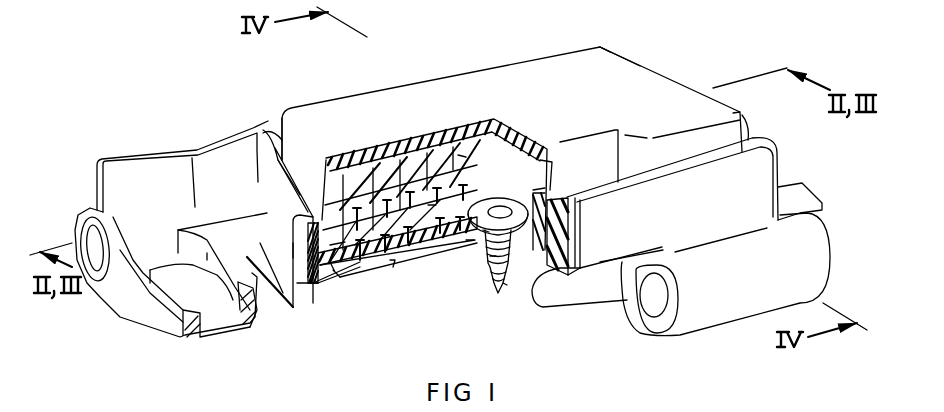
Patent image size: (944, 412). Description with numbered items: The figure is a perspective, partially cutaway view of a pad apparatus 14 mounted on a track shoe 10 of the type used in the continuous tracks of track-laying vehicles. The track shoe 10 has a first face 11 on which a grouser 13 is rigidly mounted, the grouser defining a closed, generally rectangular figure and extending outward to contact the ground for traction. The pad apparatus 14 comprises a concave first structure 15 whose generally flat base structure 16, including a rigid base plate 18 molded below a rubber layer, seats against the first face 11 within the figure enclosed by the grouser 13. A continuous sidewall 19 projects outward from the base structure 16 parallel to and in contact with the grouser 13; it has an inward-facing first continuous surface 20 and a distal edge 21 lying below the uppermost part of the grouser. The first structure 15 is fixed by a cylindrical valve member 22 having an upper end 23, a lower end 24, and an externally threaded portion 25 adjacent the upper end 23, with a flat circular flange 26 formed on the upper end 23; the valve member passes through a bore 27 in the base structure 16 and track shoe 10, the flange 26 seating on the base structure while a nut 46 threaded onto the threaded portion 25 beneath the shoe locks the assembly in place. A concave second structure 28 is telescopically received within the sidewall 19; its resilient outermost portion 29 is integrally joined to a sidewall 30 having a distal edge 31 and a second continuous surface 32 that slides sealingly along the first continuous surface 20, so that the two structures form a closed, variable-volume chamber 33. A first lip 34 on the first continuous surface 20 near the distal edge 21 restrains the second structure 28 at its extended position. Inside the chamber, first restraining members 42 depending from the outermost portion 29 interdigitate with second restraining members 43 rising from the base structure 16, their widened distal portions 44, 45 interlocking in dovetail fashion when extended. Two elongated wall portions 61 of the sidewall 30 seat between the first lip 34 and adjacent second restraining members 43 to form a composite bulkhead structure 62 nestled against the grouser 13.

The track shoe 10 is at (170, 336).
The first face 11 is at (260, 247).
The grouser 13 is at (778, 150).
The pad apparatus 14 is at (668, 60).
The first structure 15 is at (298, 308).
The base structure 16 is at (392, 263).
The base plate 18 is at (313, 300).
The sidewall 19 is at (293, 250).
The first continuous surface 20 is at (355, 240).
The distal edge 21 is at (580, 195).
The valve member 22 is at (498, 293).
The upper end 23 is at (506, 205).
The lower end 24 is at (505, 285).
The threaded portion 25 is at (493, 258).
The flange 26 is at (567, 196).
The bore 27 is at (484, 232).
The second structure 28 is at (444, 80).
The outermost portion 29 is at (613, 106).
The sidewall 30 is at (298, 143).
The distal edge 31 is at (370, 256).
The second continuous surface 32 is at (575, 227).
The chamber 33 is at (462, 153).
The first lip 34 is at (317, 193).
The first restraining members 42 is at (397, 205).
The second restraining members 43 is at (407, 190).
The widened distal portion 44 is at (440, 238).
The widened distal portion 45 is at (360, 175).
The nut 46 is at (470, 242).
The elongated wall portions 61 is at (272, 134).
The bulkhead structure 62 is at (430, 205).